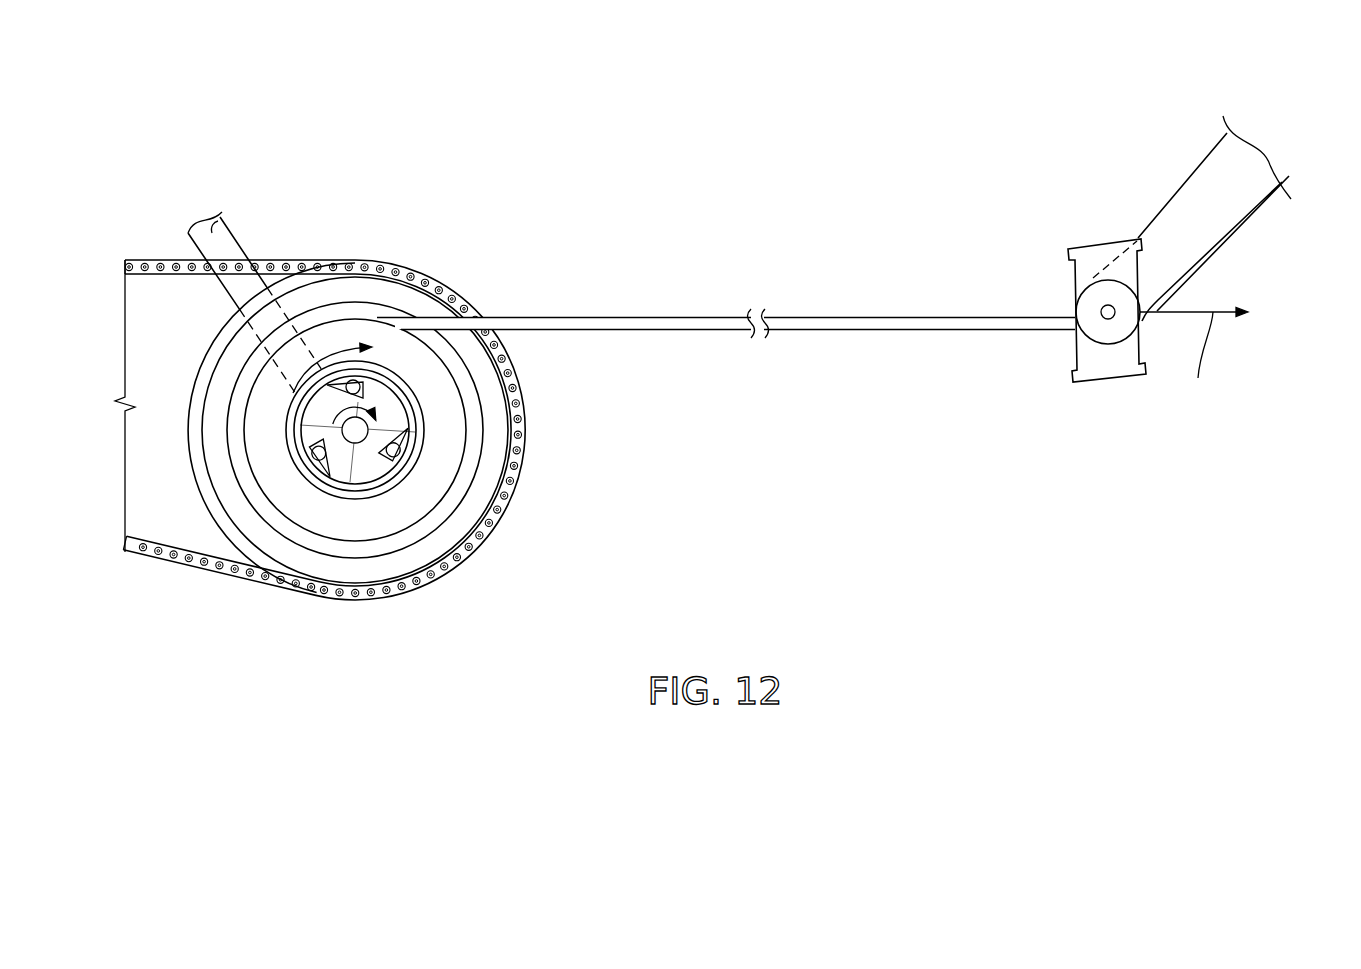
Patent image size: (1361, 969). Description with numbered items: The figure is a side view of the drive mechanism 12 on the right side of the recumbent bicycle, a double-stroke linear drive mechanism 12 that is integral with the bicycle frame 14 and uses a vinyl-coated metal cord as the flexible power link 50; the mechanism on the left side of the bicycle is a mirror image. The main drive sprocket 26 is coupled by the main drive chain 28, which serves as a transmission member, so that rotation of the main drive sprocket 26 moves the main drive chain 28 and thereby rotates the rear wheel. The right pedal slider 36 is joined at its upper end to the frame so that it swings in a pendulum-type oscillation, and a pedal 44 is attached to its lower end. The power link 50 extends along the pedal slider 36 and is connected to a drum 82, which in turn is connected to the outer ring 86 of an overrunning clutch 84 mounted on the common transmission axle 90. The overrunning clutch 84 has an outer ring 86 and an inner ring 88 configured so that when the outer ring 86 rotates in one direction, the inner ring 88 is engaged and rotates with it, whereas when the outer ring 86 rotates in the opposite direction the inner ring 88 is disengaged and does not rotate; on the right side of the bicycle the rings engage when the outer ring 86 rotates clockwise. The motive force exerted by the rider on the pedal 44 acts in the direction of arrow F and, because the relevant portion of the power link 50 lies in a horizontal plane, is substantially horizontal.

The double-stroke linear drive mechanism 12 is at (610, 198).
The bicycle frame 14 is at (212, 231).
The main drive sprocket 26 is at (357, 290).
The main drive chain 28 is at (140, 259).
The right pedal slider 36 is at (1178, 202).
The pedal 44 is at (1113, 358).
The power link 50 is at (795, 317).
The drum 82 is at (302, 537).
The overrunning clutch 84 is at (493, 427).
The outer ring 86 is at (368, 483).
The inner ring 88 is at (365, 470).
The transmission axle 90 is at (362, 428).